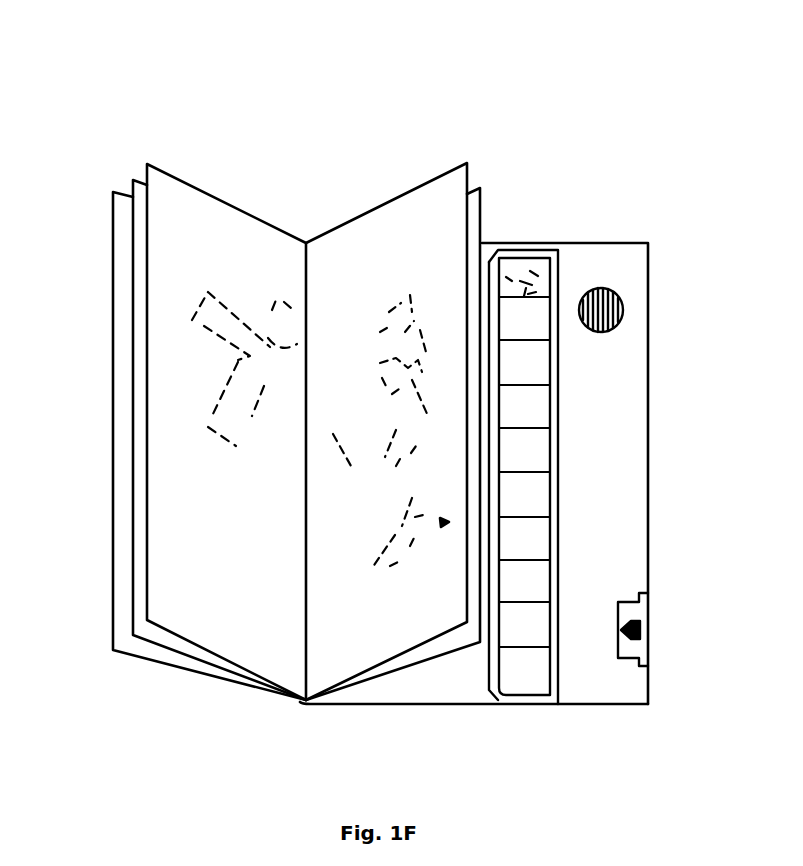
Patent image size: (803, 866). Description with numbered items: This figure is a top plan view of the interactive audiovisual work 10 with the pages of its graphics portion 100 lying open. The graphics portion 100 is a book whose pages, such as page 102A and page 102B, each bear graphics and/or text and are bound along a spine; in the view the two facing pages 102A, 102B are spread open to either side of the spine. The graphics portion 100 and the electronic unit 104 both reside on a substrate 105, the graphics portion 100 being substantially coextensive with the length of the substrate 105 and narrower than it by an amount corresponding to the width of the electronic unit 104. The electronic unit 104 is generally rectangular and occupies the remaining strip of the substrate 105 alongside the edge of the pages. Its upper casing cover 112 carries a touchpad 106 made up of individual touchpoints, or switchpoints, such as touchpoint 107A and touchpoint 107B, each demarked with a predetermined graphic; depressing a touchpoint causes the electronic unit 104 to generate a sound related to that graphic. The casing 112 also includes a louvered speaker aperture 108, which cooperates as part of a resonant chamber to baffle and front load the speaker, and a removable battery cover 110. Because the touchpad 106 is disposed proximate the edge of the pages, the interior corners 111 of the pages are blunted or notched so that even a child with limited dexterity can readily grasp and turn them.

The interactive audiovisual work 10 is at (180, 118).
The graphics portion 100 is at (112, 505).
The page 102A is at (258, 217).
The page 102B is at (378, 206).
The electronic unit 104 is at (568, 241).
The substrate 105 is at (430, 705).
The touchpad 106 is at (545, 706).
The touchpoint 107A is at (533, 660).
The touchpoint 107B is at (535, 625).
The louvered speaker aperture 108 is at (605, 333).
The removable battery cover 110 is at (648, 643).
The interior corner 111 is at (490, 258).
The upper casing cover 112 is at (648, 487).